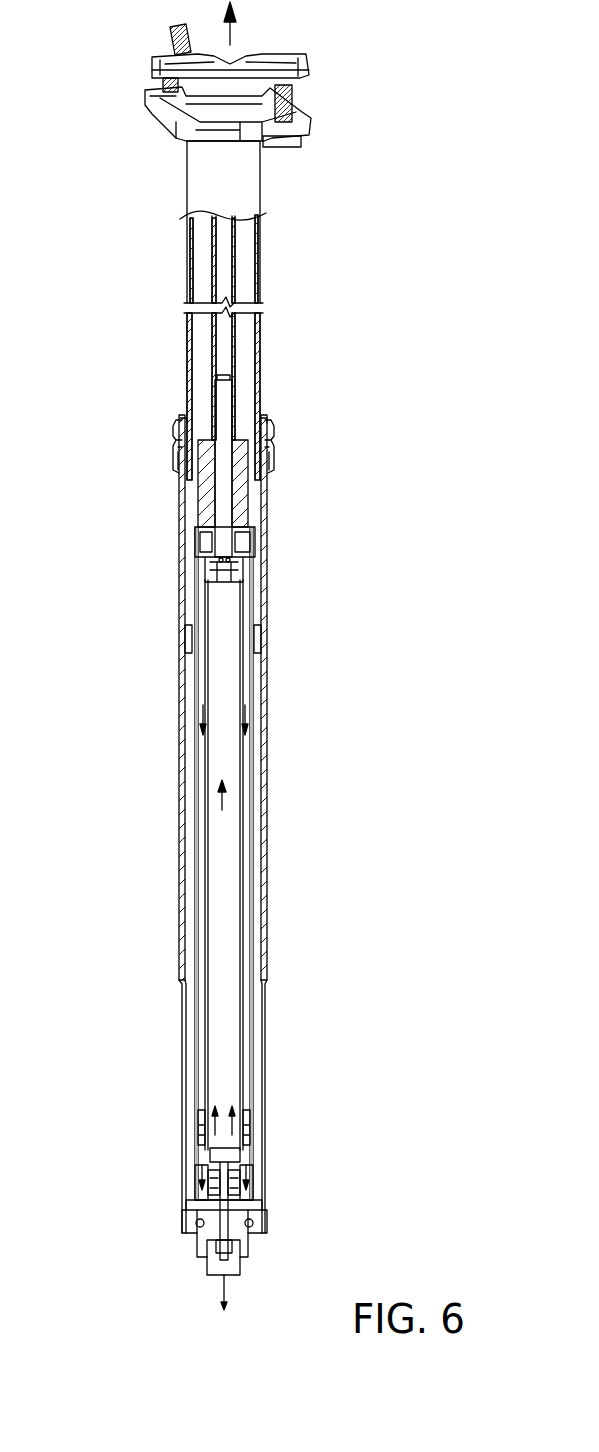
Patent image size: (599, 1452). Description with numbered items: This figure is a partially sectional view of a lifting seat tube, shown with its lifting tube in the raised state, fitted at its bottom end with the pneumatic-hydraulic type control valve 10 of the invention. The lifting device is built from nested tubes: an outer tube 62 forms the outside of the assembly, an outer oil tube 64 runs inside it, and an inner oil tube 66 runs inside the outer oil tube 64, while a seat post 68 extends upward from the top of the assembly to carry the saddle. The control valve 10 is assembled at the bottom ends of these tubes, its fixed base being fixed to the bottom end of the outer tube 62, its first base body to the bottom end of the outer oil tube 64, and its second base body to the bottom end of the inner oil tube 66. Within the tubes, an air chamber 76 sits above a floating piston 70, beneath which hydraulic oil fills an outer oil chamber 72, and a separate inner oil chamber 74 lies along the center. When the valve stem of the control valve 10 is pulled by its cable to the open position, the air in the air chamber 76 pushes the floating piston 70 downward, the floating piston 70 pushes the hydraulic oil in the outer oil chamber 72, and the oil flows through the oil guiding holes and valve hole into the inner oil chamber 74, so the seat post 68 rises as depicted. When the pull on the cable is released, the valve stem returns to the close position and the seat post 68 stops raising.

The pneumatic-hydraulic type control valve 10 is at (178, 1256).
The outer tube 62 is at (268, 718).
The outer oil tube 64 is at (252, 820).
The inner oil tube 66 is at (240, 856).
The seat post 68 is at (237, 188).
The floating piston 70 is at (200, 1133).
The outer oil chamber 72 is at (200, 1183).
The inner oil chamber 74 is at (226, 922).
The air chamber 76 is at (245, 978).